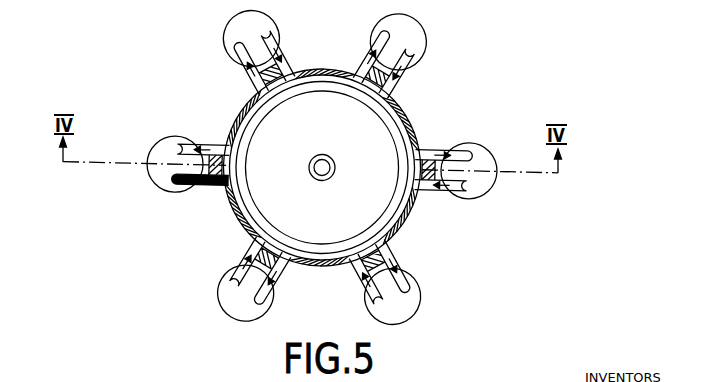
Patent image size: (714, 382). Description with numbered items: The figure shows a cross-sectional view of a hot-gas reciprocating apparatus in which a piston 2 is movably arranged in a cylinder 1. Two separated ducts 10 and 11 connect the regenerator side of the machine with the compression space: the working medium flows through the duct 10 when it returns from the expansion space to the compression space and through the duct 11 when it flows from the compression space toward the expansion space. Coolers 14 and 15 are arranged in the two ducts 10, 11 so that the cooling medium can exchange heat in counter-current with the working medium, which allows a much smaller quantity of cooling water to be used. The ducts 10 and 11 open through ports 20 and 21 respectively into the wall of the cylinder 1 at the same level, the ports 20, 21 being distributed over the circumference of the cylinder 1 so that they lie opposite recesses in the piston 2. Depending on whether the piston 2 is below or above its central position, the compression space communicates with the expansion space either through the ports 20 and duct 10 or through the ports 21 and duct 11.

The cylinder 1 is at (413, 120).
The piston 2 is at (401, 143).
The duct 10 is at (166, 150).
The duct 11 is at (176, 188).
The cooler 14 is at (168, 150).
The cooler 15 is at (168, 176).
The port 20 is at (228, 148).
The port 21 is at (226, 182).